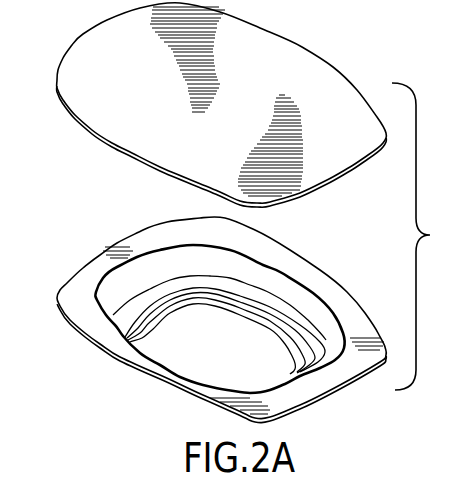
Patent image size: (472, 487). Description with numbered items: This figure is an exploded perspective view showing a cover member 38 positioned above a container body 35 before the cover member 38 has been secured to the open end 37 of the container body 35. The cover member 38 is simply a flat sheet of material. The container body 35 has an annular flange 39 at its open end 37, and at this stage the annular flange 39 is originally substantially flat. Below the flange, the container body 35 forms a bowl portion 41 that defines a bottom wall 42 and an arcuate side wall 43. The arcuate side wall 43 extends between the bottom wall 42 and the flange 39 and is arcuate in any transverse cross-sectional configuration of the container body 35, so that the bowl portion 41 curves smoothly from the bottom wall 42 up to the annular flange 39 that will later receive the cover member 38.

The container body 35 is at (202, 311).
The open end 37 is at (153, 278).
The cover member 38 is at (292, 65).
The annular flange 39 is at (82, 289).
The bowl portion 41 is at (237, 287).
The bottom wall 42 is at (200, 353).
The arcuate side wall 43 is at (297, 317).